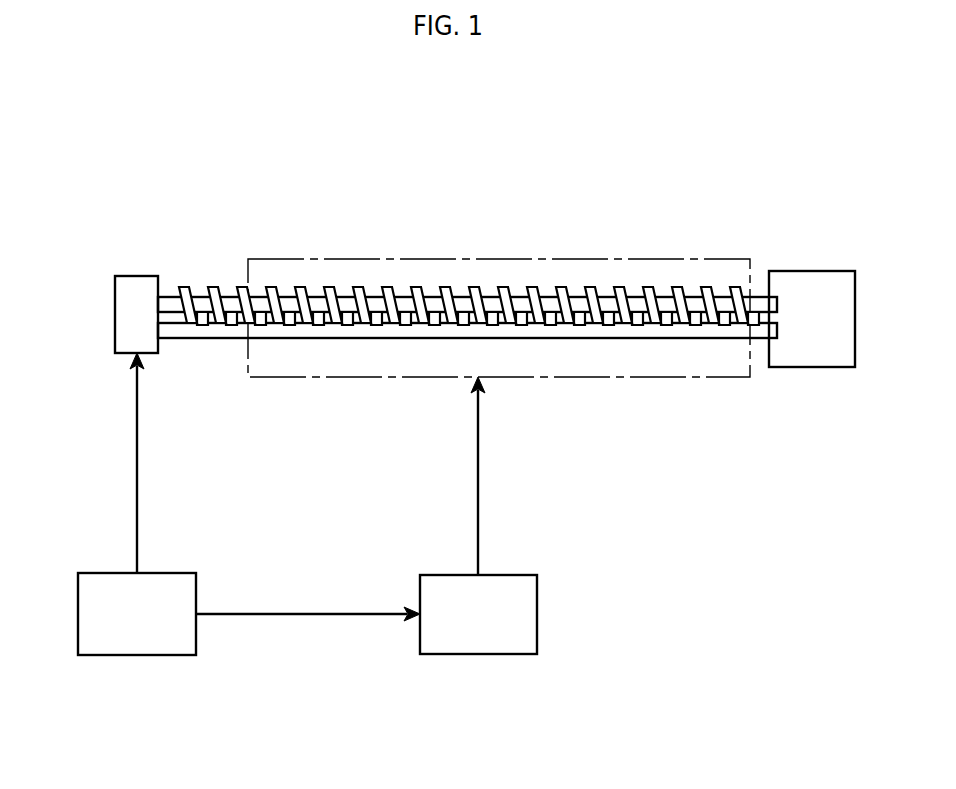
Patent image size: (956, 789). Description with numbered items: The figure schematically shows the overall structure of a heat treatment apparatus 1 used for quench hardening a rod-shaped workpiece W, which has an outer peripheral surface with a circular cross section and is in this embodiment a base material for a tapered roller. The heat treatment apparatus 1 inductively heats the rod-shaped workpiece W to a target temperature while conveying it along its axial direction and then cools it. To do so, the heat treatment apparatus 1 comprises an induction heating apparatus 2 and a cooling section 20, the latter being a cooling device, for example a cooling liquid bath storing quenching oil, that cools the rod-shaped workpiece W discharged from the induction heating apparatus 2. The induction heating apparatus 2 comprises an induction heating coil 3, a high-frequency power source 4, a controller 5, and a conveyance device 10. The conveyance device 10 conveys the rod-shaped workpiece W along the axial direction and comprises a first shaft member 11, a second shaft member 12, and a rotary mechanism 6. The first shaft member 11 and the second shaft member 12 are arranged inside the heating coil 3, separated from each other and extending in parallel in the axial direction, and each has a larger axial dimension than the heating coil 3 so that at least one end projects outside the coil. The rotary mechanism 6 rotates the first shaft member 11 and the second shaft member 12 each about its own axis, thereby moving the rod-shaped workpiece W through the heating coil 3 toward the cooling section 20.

The heat treatment apparatus 1 is at (731, 196).
The induction heating apparatus 2 is at (607, 248).
The induction heating coil 3 is at (523, 258).
The high-frequency power source 4 is at (518, 612).
The controller 5 is at (97, 615).
The rotary mechanism 6 is at (129, 318).
The conveyance device 10 is at (180, 275).
The first shaft member 11 is at (205, 339).
The second shaft member 12 is at (197, 292).
The cooling section 20 is at (811, 270).
The rod-shaped workpiece W is at (725, 322).